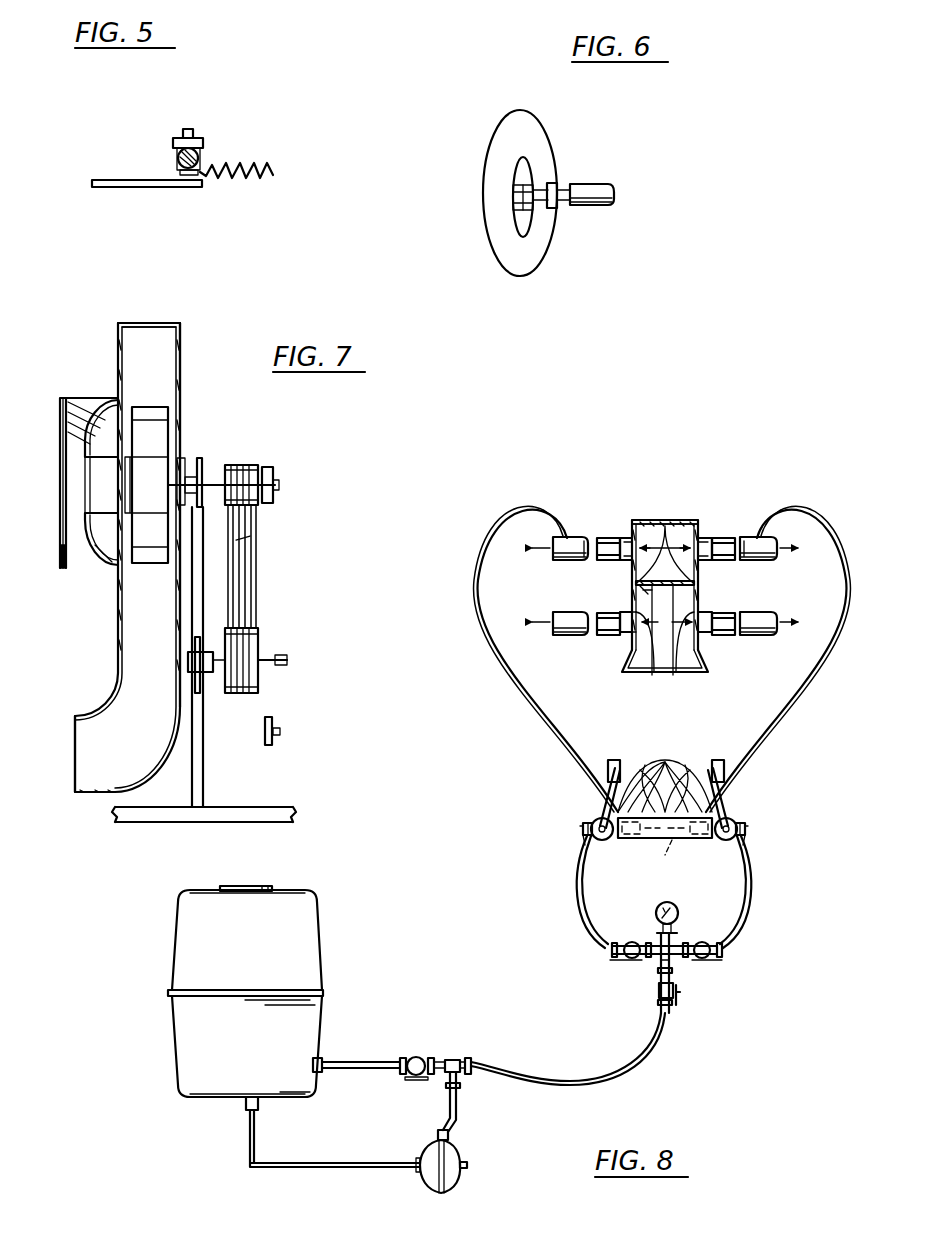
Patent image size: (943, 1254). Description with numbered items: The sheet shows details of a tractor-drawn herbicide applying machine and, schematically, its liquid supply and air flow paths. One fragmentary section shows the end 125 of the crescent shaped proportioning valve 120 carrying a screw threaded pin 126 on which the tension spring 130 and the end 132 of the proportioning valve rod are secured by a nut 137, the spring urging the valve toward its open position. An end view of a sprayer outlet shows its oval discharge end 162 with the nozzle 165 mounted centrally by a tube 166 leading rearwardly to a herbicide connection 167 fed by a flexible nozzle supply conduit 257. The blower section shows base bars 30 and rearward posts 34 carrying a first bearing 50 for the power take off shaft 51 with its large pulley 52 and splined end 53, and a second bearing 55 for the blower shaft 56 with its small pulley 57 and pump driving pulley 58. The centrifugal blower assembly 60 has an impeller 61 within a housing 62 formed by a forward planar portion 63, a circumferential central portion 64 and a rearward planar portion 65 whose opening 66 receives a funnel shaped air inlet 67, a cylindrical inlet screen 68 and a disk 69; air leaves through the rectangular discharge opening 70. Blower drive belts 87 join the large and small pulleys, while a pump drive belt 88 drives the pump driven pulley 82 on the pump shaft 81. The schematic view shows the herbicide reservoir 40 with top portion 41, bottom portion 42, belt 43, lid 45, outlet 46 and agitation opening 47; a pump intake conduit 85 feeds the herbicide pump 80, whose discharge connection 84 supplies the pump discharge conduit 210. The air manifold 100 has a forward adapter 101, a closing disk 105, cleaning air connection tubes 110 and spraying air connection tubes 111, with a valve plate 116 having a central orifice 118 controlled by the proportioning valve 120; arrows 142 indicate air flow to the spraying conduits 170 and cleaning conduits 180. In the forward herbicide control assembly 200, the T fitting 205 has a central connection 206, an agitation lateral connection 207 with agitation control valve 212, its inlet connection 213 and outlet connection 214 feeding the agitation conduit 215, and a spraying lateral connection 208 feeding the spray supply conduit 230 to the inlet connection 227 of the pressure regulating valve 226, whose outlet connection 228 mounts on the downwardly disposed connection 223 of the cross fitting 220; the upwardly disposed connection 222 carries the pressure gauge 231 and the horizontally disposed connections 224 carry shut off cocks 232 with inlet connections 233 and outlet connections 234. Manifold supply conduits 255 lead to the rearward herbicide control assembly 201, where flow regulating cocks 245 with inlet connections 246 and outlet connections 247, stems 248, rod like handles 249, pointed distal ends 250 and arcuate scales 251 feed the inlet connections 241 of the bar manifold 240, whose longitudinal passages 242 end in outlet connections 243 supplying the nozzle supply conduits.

In FIG. 5, the end of proportioning valve 125 is at (118, 181).
In FIG. 5, the screw threaded pin 126 is at (190, 130).
In FIG. 5, the tension spring 130 is at (275, 167).
In FIG. 5, the end of proportioning valve rod 132 is at (178, 160).
In FIG. 5, the nut 137 is at (203, 143).
In FIG. 6, the discharge end 162 is at (546, 117).
In FIG. 6, the nozzle 165 is at (513, 222).
In FIG. 6, the tube 166 is at (538, 203).
In FIG. 6, the herbicide connection 167 is at (566, 183).
In FIG. 8, the herbicide connection 167 is at (555, 537).
In FIG. 6, the flexible nozzle supply conduits 257 is at (600, 205).
In FIG. 8, the flexible nozzle supply conduits 257 is at (522, 510).
In FIG. 7, the elongated base bars 30 is at (240, 818).
In FIG. 7, the rearward posts 34 is at (203, 766).
In FIG. 7, the first bearing 50 is at (205, 672).
In FIG. 7, the power take off shaft 51 is at (200, 680).
In FIG. 7, the large pulley 52 is at (250, 680).
In FIG. 7, the splined end 53 is at (285, 657).
In FIG. 7, the second bearing 55 is at (182, 465).
In FIG. 7, the blower shaft 56 is at (200, 460).
In FIG. 7, the small pulley 57 is at (240, 465).
In FIG. 7, the pump driving pulley 58 is at (270, 467).
In FIG. 7, the centrifugal blower assembly 60 is at (110, 386).
In FIG. 7, the impeller 61 is at (158, 407).
In FIG. 7, the housing 62 is at (118, 650).
In FIG. 7, the forward planar portion 63 is at (180, 338).
In FIG. 7, the central portion 64 is at (137, 322).
In FIG. 7, the rearward planar portion 65 is at (118, 338).
In FIG. 7, the opening 66 is at (100, 560).
In FIG. 7, the funnel shaped air inlet 67 is at (85, 520).
In FIG. 7, the cylindrical inlet screen 68 is at (60, 398).
In FIG. 7, the disk 69 is at (60, 440).
In FIG. 7, the rectangular discharge opening 70 is at (75, 775).
In FIG. 7, the pump shaft 81 is at (280, 731).
In FIG. 8, the pump shaft 81 is at (466, 1168).
In FIG. 7, the pump driven pulley 82 is at (270, 745).
In FIG. 7, the blower drive belts 87 is at (240, 530).
In FIG. 7, the pump drive belt 88 is at (275, 560).
In FIG. 8, the herbicide reservoir 40 is at (325, 979).
In FIG. 8, the top portion 41 is at (300, 907).
In FIG. 8, the bottom portion 42 is at (178, 1056).
In FIG. 8, the belt 43 is at (168, 993).
In FIG. 8, the lid 45 is at (262, 886).
In FIG. 8, the outlet 46 is at (246, 1110).
In FIG. 8, the agitation opening 47 is at (318, 1058).
In FIG. 8, the herbicide pump 80 is at (437, 1182).
In FIG. 8, the discharge connection 84 is at (448, 1135).
In FIG. 8, the pump intake conduit 85 is at (365, 1163).
In FIG. 8, the air manifold 100 is at (684, 516).
In FIG. 8, the forward adapter 101 is at (708, 668).
In FIG. 8, the disk 105 is at (668, 520).
In FIG. 8, the cleaning air connection tubes 110 is at (632, 636).
In FIG. 8, the spraying air connection tubes 111 is at (626, 538).
In FIG. 8, the circular valve plate 116 is at (680, 582).
In FIG. 8, the central circular orifice 118 is at (666, 524).
In FIG. 8, the proportioning valve 120 is at (636, 590).
In FIG. 8, the arrows 142 is at (670, 676).
In FIG. 8, the spraying conduits 170 is at (566, 537).
In FIG. 8, the cleaning conduit 180 is at (575, 636).
In FIG. 8, the forward herbicide control assembly 200 is at (690, 988).
In FIG. 8, the rearward herbicide control assembly 201 is at (748, 802).
In FIG. 8, the T pipe fitting 205 is at (455, 1060).
In FIG. 8, the central connection 206 is at (460, 1086).
In FIG. 8, the agitation lateral connection 207 is at (462, 1058).
In FIG. 8, the spraying lateral connection 208 is at (470, 1058).
In FIG. 8, the pump discharge conduit 210 is at (456, 1110).
In FIG. 8, the agitation control valve 212 is at (416, 1057).
In FIG. 8, the inlet connection 213 is at (432, 1074).
In FIG. 8, the outlet connection 214 is at (375, 1046).
In FIG. 8, the agitation conduit 215 is at (363, 1070).
In FIG. 8, the cross pipe fitting 220 is at (672, 976).
In FIG. 8, the upwardly disposed connection 222 is at (676, 946).
In FIG. 8, the downwardly disposed connection 223 is at (658, 972).
In FIG. 8, the horizontally disposed connections 224 is at (660, 945).
In FIG. 8, the pressure regulating valve 226 is at (659, 990).
In FIG. 8, the inlet connection 227 is at (660, 1005).
In FIG. 8, the outlet connection 228 is at (678, 996).
In FIG. 8, the spray supply conduit 230 is at (652, 1062).
In FIG. 8, the pressure gauge 231 is at (680, 908).
In FIG. 8, the shut off cocks 232 is at (634, 942).
In FIG. 8, the inlet connection 233 is at (649, 962).
In FIG. 8, the outlet connection 234 is at (612, 952).
In FIG. 8, the bar manifold 240 is at (655, 840).
In FIG. 8, the inlet connections 241 is at (584, 838).
In FIG. 8, the longitudinal passages 242 is at (680, 840).
In FIG. 8, the outlet connections 243 is at (680, 760).
In FIG. 8, the herbicide flow regulating cocks 245 is at (584, 824).
In FIG. 8, the inlet connection 246 is at (604, 842).
In FIG. 8, the outlet connection 247 is at (612, 806).
In FIG. 8, the stem 248 is at (581, 832).
In FIG. 8, the rod like handle 249 is at (612, 760).
In FIG. 8, the pointed distal end 250 is at (658, 720).
In FIG. 8, the arcuate horizontal scale 251 is at (668, 765).
In FIG. 8, the manifold supply conduits 255 is at (576, 898).